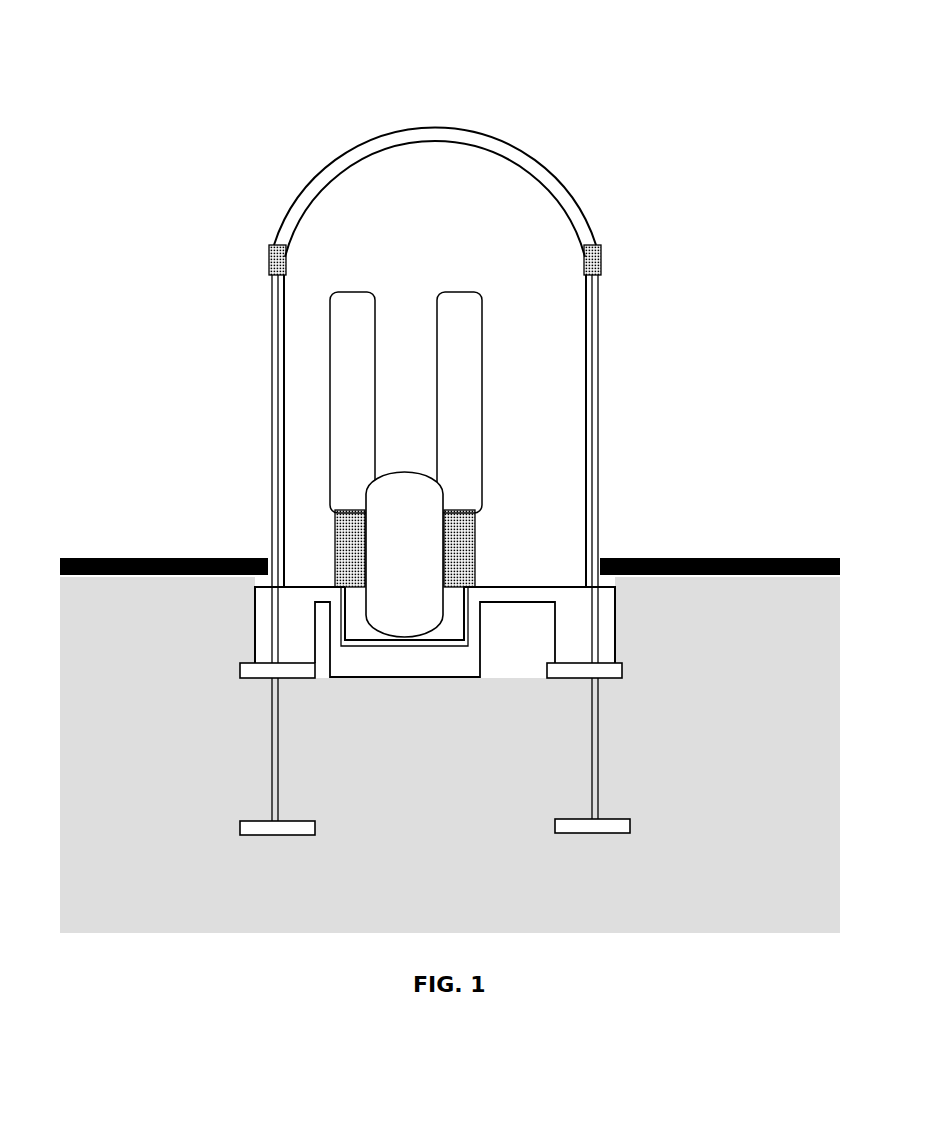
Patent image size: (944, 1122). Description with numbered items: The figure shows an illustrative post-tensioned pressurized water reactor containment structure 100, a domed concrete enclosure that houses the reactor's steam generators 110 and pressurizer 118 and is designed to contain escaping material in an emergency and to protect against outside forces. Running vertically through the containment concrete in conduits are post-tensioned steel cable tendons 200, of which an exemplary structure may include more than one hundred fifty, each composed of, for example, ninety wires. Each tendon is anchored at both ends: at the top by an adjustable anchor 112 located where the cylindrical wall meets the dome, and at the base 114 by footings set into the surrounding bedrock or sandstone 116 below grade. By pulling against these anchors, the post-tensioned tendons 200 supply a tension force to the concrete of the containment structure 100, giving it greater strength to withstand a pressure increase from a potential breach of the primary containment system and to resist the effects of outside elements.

The pressurized water reactor containment structure 100 is at (451, 42).
The steam generators 110 is at (466, 345).
The adjustable anchor 112 is at (270, 254).
The base anchor 114 is at (617, 826).
The bedrock or sandstone 116 is at (450, 745).
The pressurizer 118 is at (410, 486).
The post-tensioned steel cable tendons 200 is at (273, 349).